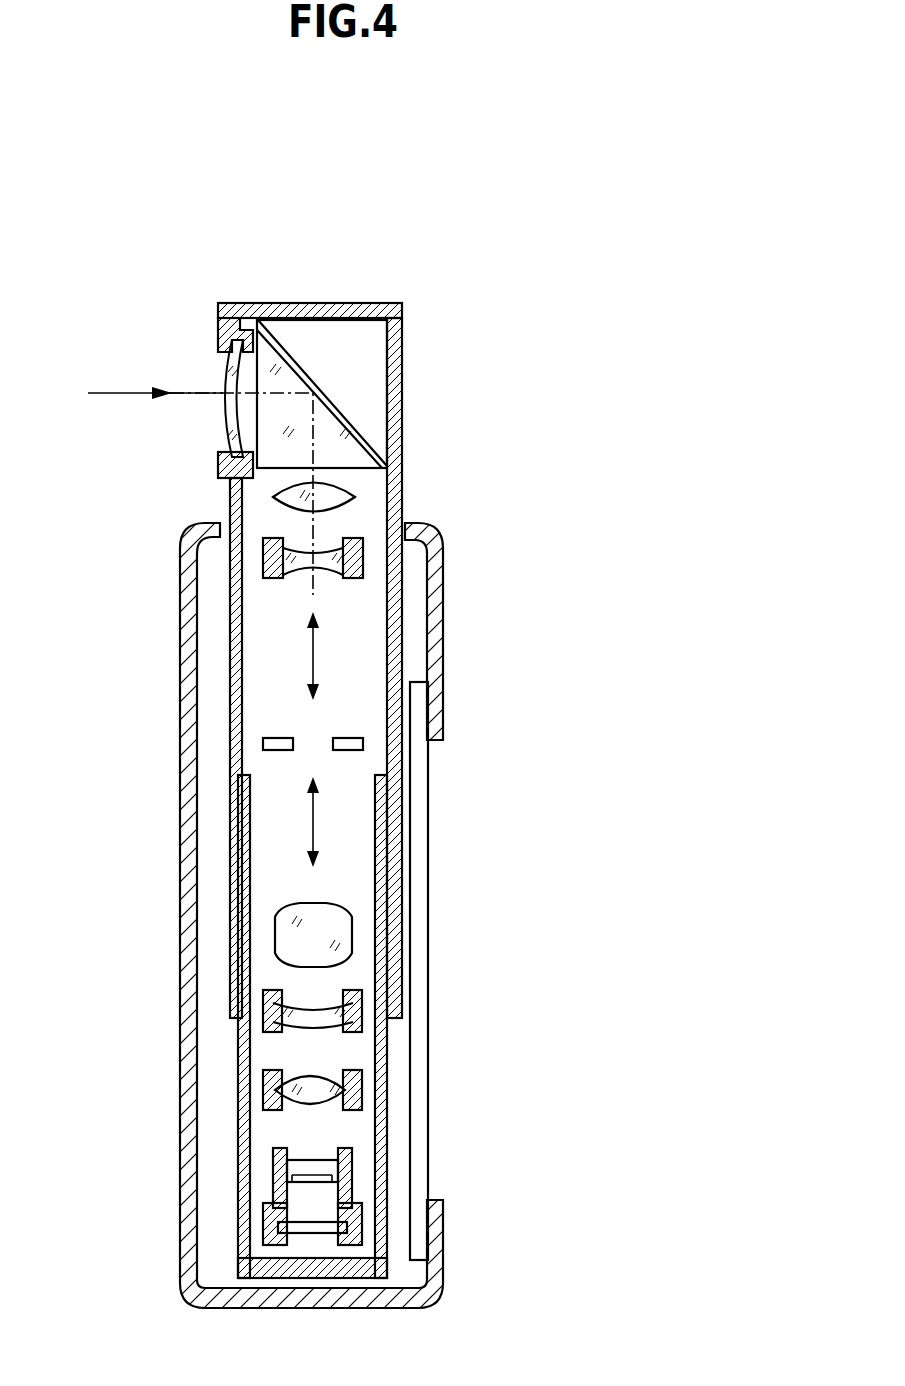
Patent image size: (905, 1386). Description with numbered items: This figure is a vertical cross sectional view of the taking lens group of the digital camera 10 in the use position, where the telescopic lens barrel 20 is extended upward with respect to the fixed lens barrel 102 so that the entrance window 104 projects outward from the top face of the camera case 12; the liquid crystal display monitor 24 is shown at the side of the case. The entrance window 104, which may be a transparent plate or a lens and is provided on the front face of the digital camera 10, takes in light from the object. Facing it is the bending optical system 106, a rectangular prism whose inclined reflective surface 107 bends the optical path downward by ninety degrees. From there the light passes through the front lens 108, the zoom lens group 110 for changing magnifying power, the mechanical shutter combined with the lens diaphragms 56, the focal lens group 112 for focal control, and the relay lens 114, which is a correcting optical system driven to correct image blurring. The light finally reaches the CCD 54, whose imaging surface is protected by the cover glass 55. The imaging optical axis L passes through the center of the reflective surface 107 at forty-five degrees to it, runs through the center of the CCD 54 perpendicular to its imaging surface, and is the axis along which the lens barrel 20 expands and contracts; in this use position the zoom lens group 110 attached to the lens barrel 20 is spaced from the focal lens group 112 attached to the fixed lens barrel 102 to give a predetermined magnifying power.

The digital camera 10 is at (335, 595).
The camera case 12 is at (447, 570).
The lens barrel 20 is at (310, 303).
The liquid crystal display monitor 24 is at (427, 1023).
The CCD 54 is at (318, 1200).
The cover glass 55 is at (313, 1165).
The lens diaphragms 56 is at (350, 744).
The fixed lens barrel 102 is at (240, 1080).
The entrance window 104 is at (223, 380).
The bending optical system 106 is at (273, 408).
The reflective surface 107 is at (338, 418).
The front lens 108 is at (337, 495).
The zoom lens group 110 is at (323, 560).
The focal lens group 112 is at (317, 1005).
The relay lens 114 is at (318, 1080).
The imaging optical axis L is at (330, 530).